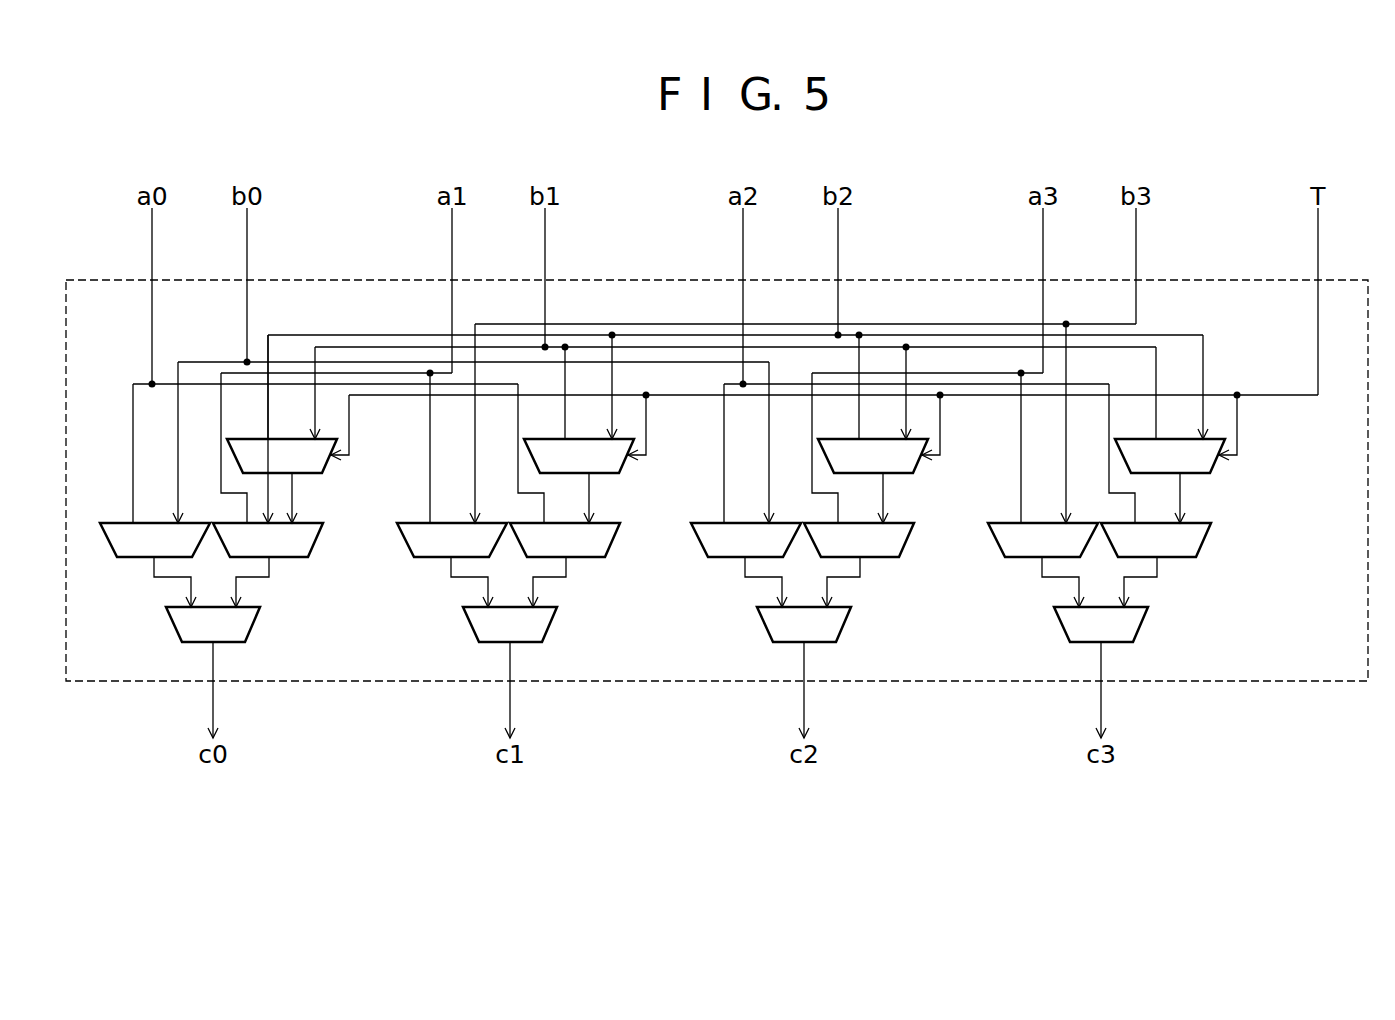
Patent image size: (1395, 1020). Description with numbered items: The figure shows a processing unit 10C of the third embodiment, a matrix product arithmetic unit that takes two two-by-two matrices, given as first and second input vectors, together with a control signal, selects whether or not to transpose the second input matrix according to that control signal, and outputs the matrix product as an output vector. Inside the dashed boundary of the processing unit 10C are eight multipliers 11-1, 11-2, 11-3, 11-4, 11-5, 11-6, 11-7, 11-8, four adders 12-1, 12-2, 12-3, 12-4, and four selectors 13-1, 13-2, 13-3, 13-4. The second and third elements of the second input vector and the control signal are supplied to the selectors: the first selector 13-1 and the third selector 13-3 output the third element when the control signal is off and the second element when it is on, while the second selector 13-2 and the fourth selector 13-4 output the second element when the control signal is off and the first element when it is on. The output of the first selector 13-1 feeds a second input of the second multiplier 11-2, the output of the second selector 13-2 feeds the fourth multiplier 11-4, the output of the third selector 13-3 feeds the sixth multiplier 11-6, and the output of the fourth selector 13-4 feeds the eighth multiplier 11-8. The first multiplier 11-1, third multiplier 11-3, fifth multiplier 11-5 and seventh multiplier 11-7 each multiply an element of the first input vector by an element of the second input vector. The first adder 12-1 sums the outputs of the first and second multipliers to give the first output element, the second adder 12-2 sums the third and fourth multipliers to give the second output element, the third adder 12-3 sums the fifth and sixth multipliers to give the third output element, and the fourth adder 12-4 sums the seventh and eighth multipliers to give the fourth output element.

The processing unit 10C is at (1350, 281).
The first multiplier 11-1 is at (113, 550).
The second multiplier 11-2 is at (309, 542).
The third multiplier 11-3 is at (410, 550).
The fourth multiplier 11-4 is at (606, 542).
The fifth multiplier 11-5 is at (704, 550).
The sixth multiplier 11-6 is at (900, 542).
The seventh multiplier 11-7 is at (1001, 550).
The eighth multiplier 11-8 is at (1197, 542).
The first adder 12-1 is at (254, 622).
The second adder 12-2 is at (551, 622).
The third adder 12-3 is at (845, 622).
The fourth adder 12-4 is at (1142, 622).
The first selector 13-1 is at (310, 473).
The second selector 13-2 is at (607, 473).
The third selector 13-3 is at (901, 473).
The fourth selector 13-4 is at (1198, 473).